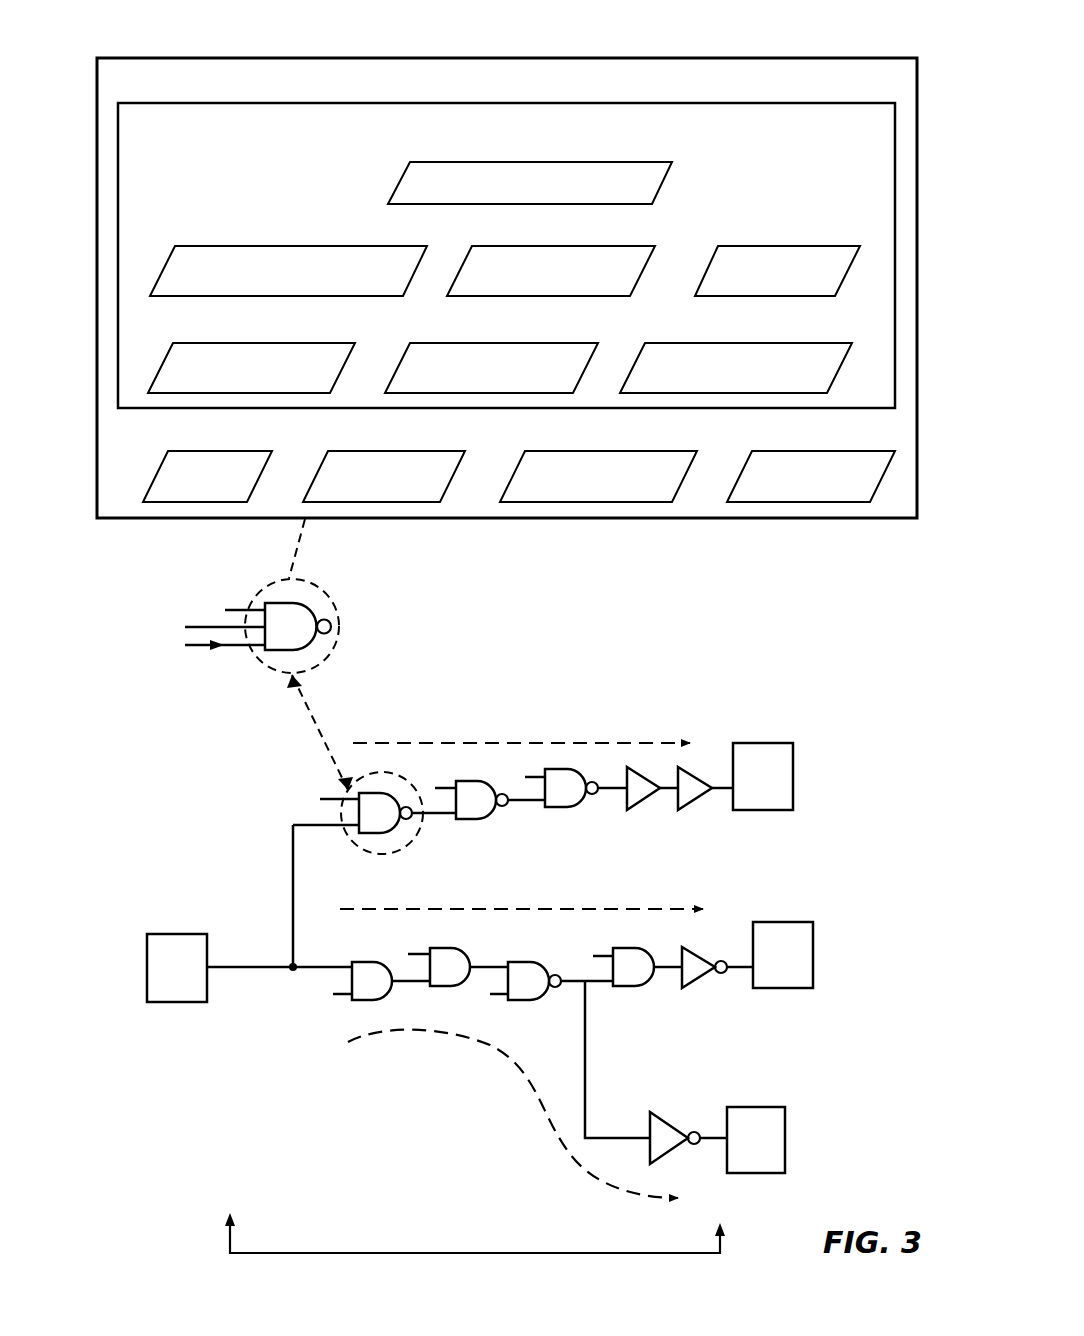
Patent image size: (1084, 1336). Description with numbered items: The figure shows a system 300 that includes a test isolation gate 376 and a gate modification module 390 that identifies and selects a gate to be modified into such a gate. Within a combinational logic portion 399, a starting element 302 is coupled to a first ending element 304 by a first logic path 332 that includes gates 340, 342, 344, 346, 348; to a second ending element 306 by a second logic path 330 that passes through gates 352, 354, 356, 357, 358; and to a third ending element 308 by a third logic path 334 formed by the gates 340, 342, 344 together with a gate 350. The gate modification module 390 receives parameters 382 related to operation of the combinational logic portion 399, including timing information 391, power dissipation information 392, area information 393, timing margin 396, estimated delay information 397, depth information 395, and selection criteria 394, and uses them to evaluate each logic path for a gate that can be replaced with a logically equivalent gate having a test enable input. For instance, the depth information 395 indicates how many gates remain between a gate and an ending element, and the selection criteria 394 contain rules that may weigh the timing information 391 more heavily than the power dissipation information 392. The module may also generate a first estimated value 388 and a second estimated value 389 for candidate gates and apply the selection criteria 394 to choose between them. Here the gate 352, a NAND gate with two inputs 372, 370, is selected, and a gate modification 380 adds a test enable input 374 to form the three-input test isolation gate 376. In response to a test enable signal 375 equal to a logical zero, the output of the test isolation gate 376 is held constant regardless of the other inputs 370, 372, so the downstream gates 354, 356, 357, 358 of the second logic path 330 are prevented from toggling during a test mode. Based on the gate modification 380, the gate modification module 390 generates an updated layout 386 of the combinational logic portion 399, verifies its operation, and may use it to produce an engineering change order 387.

The system 300 is at (176, 22).
The gate modification module 390 is at (521, 58).
The parameters 382 is at (698, 103).
The selection criteria 394 is at (400, 182).
The estimated delay information 397 is at (308, 246).
The area information 393 is at (543, 246).
The timing margin 396 is at (795, 246).
The timing information 391 is at (293, 343).
The depth information 395 is at (525, 343).
The power dissipation information 392 is at (778, 343).
The first estimated value 388 is at (228, 451).
The second estimated value 389 is at (411, 451).
The engineering change order 387 is at (638, 451).
The updated layout 386 is at (833, 451).
The test isolation gate 376 is at (306, 606).
The input 372 is at (243, 610).
The input 370 is at (195, 627).
The test enable signal 375 is at (185, 644).
The test enable input 374 is at (243, 645).
The gate modification 380 is at (322, 730).
The second logic path 330 is at (538, 743).
The gate 352 is at (375, 833).
The gate 354 is at (462, 819).
The gate 356 is at (552, 808).
The gate 357 is at (648, 798).
The gate 358 is at (702, 798).
The second ending element 306 is at (752, 743).
The first logic path 332 is at (550, 909).
The starting element 302 is at (192, 934).
The gate 340 is at (368, 962).
The gate 342 is at (447, 948).
The gate 344 is at (515, 1000).
The gate 346 is at (630, 948).
The gate 348 is at (688, 990).
The first ending element 304 is at (778, 922).
The third logic path 334 is at (348, 1042).
The gate 350 is at (660, 1118).
The third ending element 308 is at (753, 1107).
The combinational logic portion 399 is at (398, 1253).